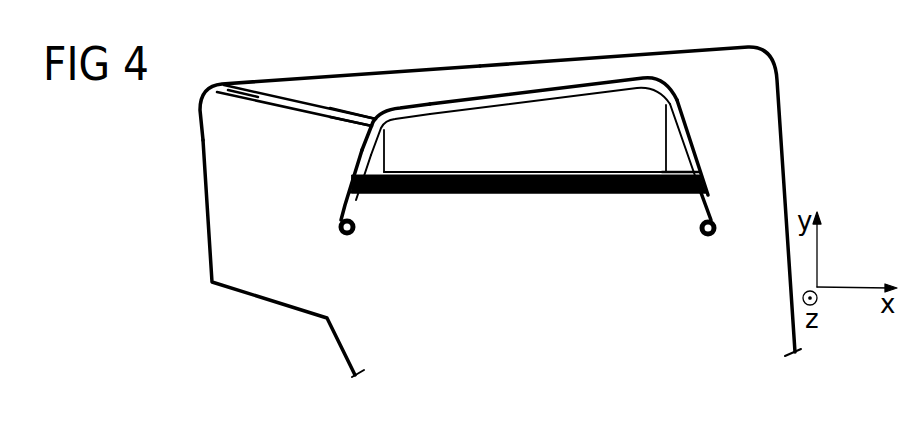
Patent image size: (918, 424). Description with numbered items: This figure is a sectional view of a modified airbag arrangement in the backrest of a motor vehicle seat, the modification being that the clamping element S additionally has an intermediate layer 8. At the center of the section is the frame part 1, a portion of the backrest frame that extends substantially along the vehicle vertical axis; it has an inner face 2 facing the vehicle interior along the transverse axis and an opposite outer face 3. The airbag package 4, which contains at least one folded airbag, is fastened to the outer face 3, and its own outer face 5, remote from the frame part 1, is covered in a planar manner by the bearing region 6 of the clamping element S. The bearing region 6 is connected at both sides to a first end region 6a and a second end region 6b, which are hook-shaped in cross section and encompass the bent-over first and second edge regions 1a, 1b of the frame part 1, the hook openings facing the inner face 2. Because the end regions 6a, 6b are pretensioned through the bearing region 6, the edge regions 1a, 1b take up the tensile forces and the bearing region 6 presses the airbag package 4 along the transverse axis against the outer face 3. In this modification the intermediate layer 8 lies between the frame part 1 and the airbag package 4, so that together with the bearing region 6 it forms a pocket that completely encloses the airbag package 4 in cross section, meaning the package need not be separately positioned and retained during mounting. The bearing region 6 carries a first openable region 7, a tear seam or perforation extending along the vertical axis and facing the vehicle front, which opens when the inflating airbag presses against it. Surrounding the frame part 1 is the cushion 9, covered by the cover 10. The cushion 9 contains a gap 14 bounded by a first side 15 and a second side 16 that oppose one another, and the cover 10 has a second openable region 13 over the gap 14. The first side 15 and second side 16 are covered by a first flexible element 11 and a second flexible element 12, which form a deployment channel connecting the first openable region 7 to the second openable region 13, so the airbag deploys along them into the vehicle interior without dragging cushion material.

The frame part 1 is at (565, 197).
The first edge region 1a is at (693, 198).
The second edge region 1b is at (357, 210).
The inner face 2 is at (495, 197).
The outer face 3 is at (468, 170).
The airbag package 4 is at (620, 118).
The outer face of the airbag package 5 is at (535, 97).
The bearing region 6 is at (590, 72).
The first end region 6a is at (706, 240).
The second end region 6b is at (343, 240).
The first openable region 7 is at (338, 116).
The intermediate layer 8 is at (680, 172).
The cushion 9 is at (265, 270).
The cover 10 is at (783, 177).
The first flexible element 11 is at (384, 110).
The second flexible element 12 is at (304, 107).
The second openable region 13 is at (222, 82).
The gap 14 is at (345, 108).
The first side 15 is at (255, 100).
The second side 16 is at (308, 100).
The clamping element S is at (683, 92).